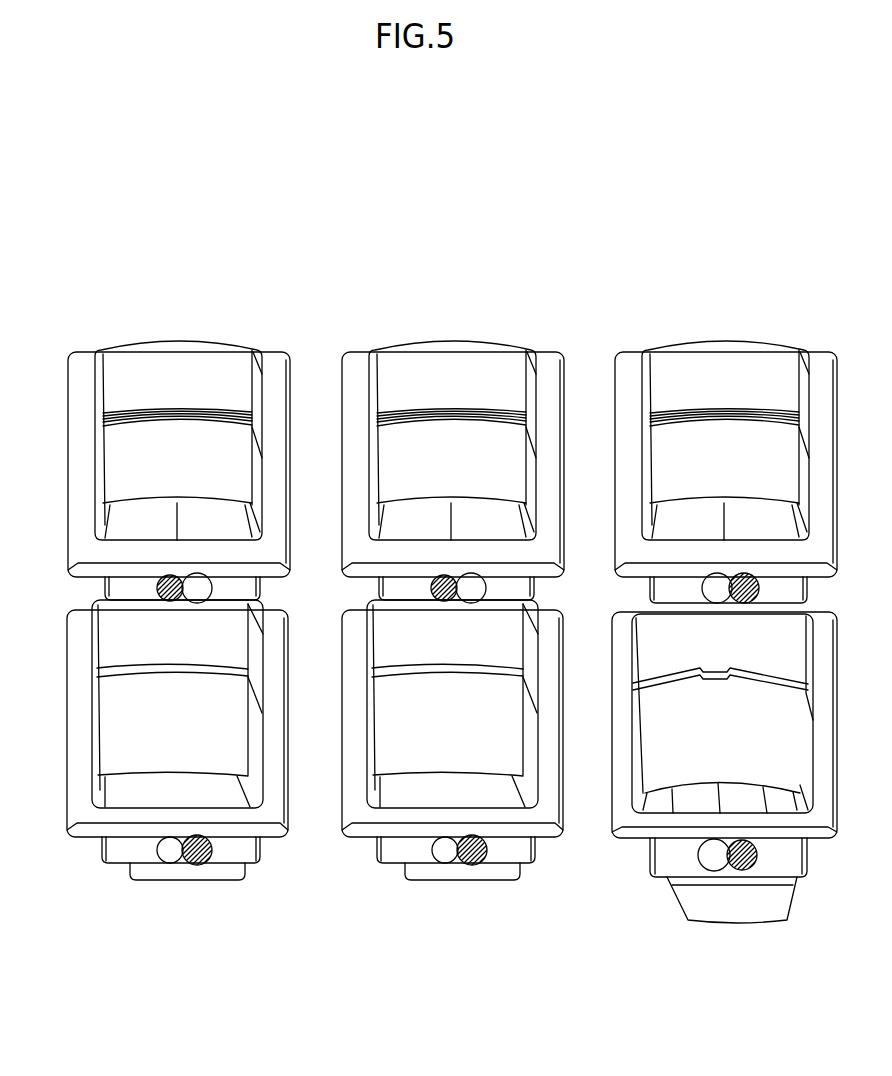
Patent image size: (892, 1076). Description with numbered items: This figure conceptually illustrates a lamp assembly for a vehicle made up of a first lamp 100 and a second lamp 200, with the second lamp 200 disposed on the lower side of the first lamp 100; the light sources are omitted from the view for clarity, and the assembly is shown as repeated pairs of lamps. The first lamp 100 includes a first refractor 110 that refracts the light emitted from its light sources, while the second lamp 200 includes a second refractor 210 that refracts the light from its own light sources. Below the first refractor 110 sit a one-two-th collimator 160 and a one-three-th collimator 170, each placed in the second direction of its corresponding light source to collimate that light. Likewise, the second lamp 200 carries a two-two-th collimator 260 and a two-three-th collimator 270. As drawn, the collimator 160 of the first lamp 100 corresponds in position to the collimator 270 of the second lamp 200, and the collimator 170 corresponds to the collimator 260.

The first lamp 100 is at (187, 472).
The first refractor 110 is at (253, 458).
The (1-2)-th collimator 160 is at (203, 581).
The (1-3)-th collimator 170 is at (145, 581).
The second lamp 200 is at (187, 740).
The second refractor 210 is at (250, 720).
The (2-2)-th collimator 260 is at (142, 840).
The (2-3)-th collimator 270 is at (203, 840).